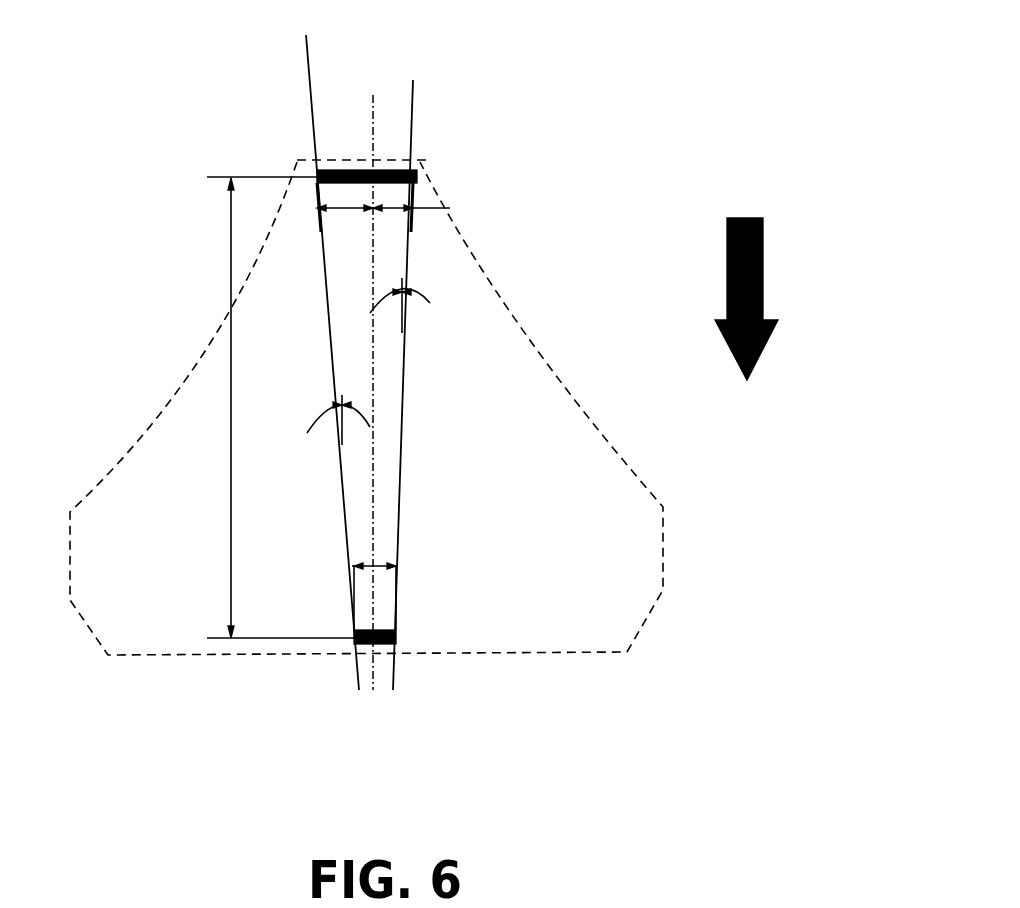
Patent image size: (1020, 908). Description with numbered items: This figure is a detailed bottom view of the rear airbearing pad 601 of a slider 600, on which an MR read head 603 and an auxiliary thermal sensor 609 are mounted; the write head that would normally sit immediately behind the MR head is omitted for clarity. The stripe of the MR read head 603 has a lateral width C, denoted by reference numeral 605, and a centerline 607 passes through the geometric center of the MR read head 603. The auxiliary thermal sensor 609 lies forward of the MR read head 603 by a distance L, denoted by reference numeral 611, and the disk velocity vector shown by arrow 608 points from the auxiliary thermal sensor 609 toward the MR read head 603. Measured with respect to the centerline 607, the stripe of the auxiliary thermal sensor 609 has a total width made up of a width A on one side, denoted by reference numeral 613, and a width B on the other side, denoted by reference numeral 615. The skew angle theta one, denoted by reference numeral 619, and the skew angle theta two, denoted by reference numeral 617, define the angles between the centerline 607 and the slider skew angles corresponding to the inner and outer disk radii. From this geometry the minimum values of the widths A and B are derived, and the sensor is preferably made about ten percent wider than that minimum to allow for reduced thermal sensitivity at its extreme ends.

The slider 600 is at (718, 73).
The rear airbearing pad 601 is at (473, 233).
The MR read head 603 is at (396, 637).
The lateral width C 605 is at (378, 562).
The centerline 607 is at (376, 138).
The arrow 608 is at (727, 277).
The auxiliary thermal sensor 609 is at (417, 173).
The distance L 611 is at (228, 238).
The width A 613 is at (328, 218).
The width B 615 is at (409, 200).
The skew angle θ2 617 is at (403, 285).
The skew angle θ1 619 is at (340, 400).